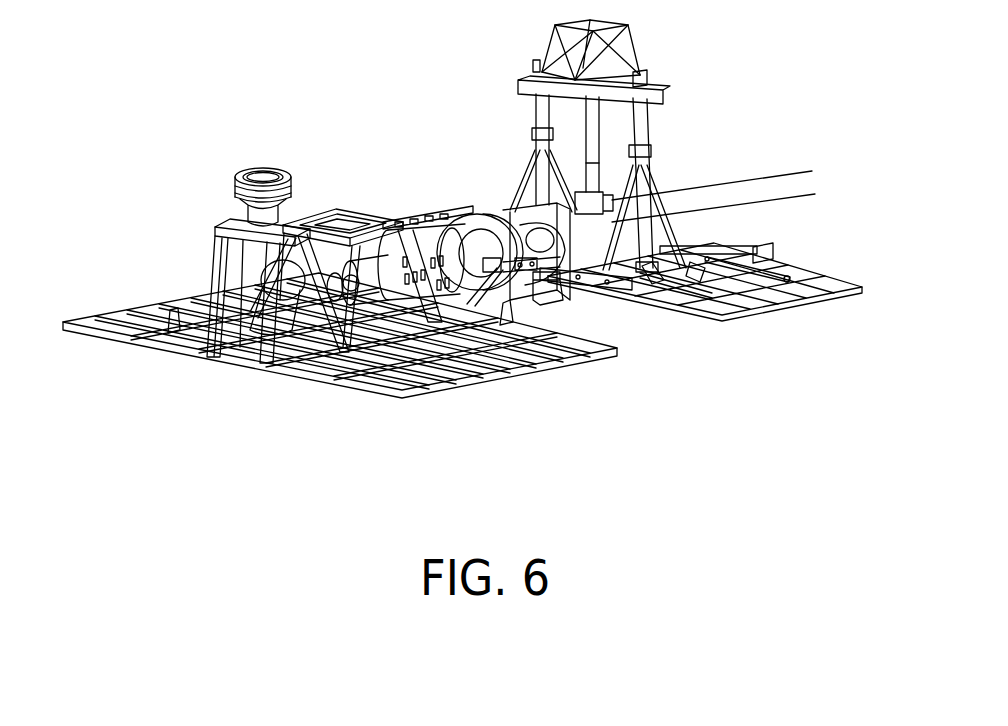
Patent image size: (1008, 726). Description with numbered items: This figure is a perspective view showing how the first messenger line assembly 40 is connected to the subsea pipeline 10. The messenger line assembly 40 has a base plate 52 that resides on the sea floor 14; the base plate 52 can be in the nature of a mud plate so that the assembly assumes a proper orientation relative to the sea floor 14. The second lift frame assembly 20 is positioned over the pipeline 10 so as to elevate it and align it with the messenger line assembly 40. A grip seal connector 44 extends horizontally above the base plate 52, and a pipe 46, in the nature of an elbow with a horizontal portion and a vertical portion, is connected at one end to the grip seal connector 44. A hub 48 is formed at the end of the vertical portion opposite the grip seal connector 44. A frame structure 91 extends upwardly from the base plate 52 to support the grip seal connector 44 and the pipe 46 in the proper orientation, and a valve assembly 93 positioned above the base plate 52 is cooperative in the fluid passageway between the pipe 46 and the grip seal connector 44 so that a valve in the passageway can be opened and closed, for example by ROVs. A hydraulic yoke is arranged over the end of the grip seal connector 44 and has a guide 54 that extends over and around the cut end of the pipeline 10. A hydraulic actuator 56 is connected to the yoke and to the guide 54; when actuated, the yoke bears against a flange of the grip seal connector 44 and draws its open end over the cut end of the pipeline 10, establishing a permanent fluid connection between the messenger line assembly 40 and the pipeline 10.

The pipeline 10 is at (727, 198).
The sea floor 14 is at (684, 361).
The second lift frame assembly 20 is at (787, 275).
The first messenger line assembly 40 is at (262, 153).
The grip seal connector 44 is at (432, 262).
The pipe 46 is at (283, 297).
The hub 48 is at (291, 181).
The base plate 52 is at (290, 377).
The guide 54 is at (537, 150).
The hydraulic actuator 56 is at (552, 280).
The frame structure 91 is at (215, 273).
The valve assembly 93 is at (388, 220).